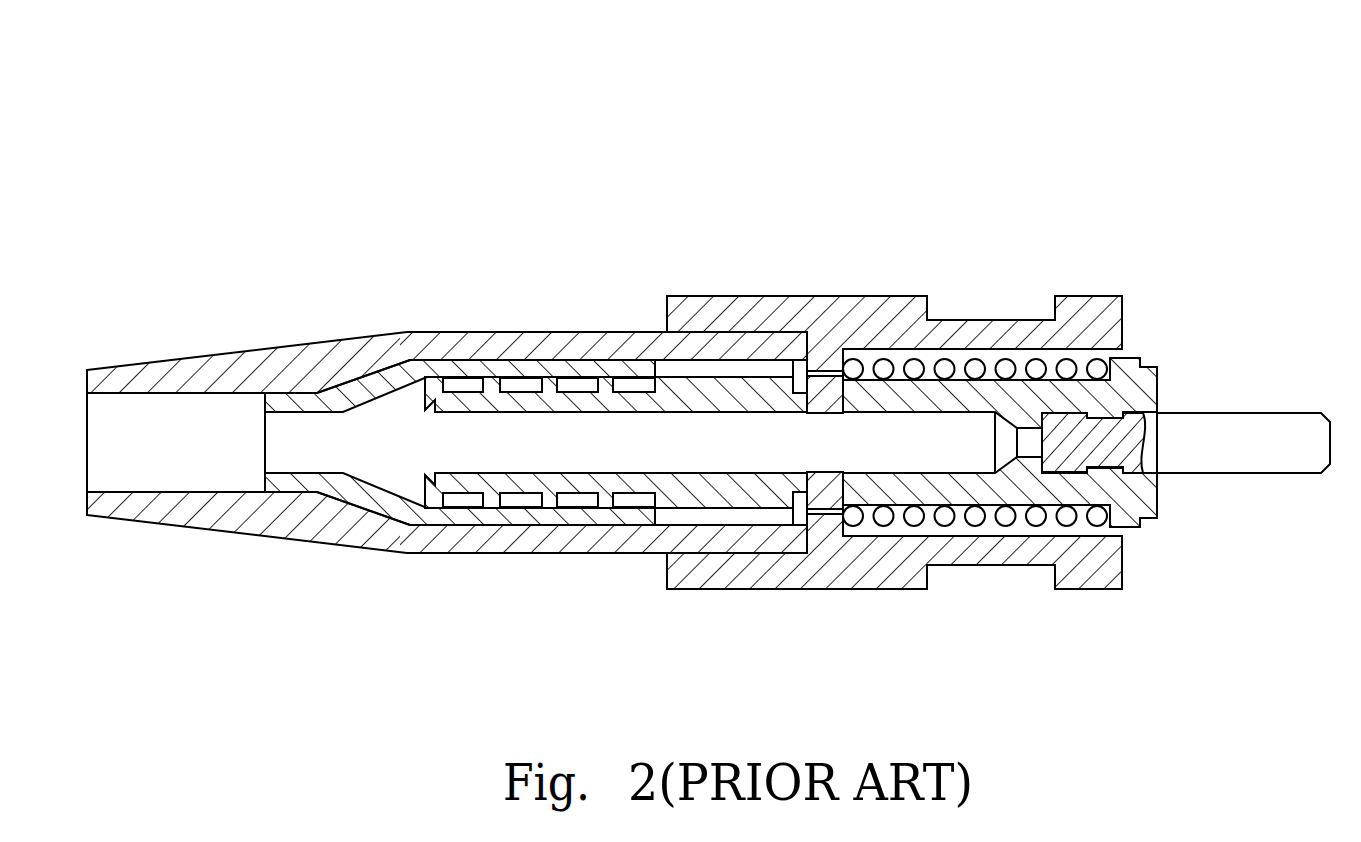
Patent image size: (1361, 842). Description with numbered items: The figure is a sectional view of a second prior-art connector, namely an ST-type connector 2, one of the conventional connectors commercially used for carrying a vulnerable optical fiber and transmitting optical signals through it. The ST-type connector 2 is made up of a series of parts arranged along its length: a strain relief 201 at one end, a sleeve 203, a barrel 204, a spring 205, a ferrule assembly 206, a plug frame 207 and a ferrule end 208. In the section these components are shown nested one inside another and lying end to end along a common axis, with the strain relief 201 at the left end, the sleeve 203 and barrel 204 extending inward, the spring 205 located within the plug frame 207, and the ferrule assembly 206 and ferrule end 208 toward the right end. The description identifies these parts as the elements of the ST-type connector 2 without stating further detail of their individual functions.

The ST-type connector 2 is at (1208, 140).
The strain relief 201 is at (266, 376).
The sleeve 203 is at (503, 517).
The barrel 204 is at (582, 480).
The spring 205 is at (945, 369).
The ferrule assembly 206 is at (1127, 370).
The plug frame 207 is at (826, 328).
The ferrule end 208 is at (1237, 434).